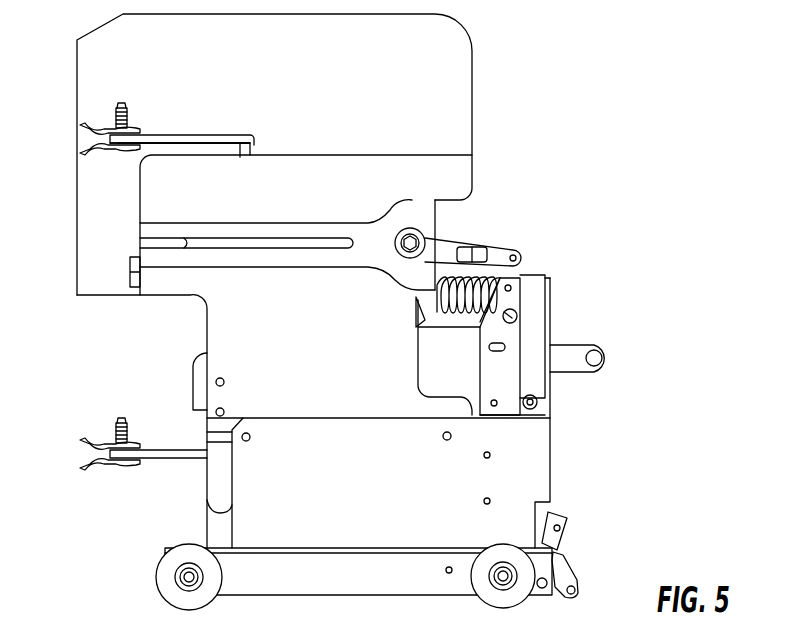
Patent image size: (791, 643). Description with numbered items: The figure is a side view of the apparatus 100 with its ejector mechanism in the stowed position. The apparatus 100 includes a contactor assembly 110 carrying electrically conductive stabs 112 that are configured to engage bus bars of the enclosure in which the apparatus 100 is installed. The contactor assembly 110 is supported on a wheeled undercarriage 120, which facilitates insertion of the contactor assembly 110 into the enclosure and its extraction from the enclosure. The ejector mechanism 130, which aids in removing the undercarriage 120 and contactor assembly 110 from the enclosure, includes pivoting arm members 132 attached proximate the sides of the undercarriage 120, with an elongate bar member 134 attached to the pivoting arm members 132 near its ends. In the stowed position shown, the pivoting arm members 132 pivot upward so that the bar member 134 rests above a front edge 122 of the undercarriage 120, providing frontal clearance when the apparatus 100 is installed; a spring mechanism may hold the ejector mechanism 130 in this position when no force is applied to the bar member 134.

The apparatus 100 is at (560, 77).
The contactor assembly 110 is at (472, 173).
The electrically conductive stabs 112 is at (97, 127).
The wheeled undercarriage 120 is at (296, 596).
The front edge 122 is at (557, 607).
The ejector mechanism 130 is at (573, 478).
The pivoting arm members 132 is at (568, 573).
The elongate bar member 134 is at (566, 516).